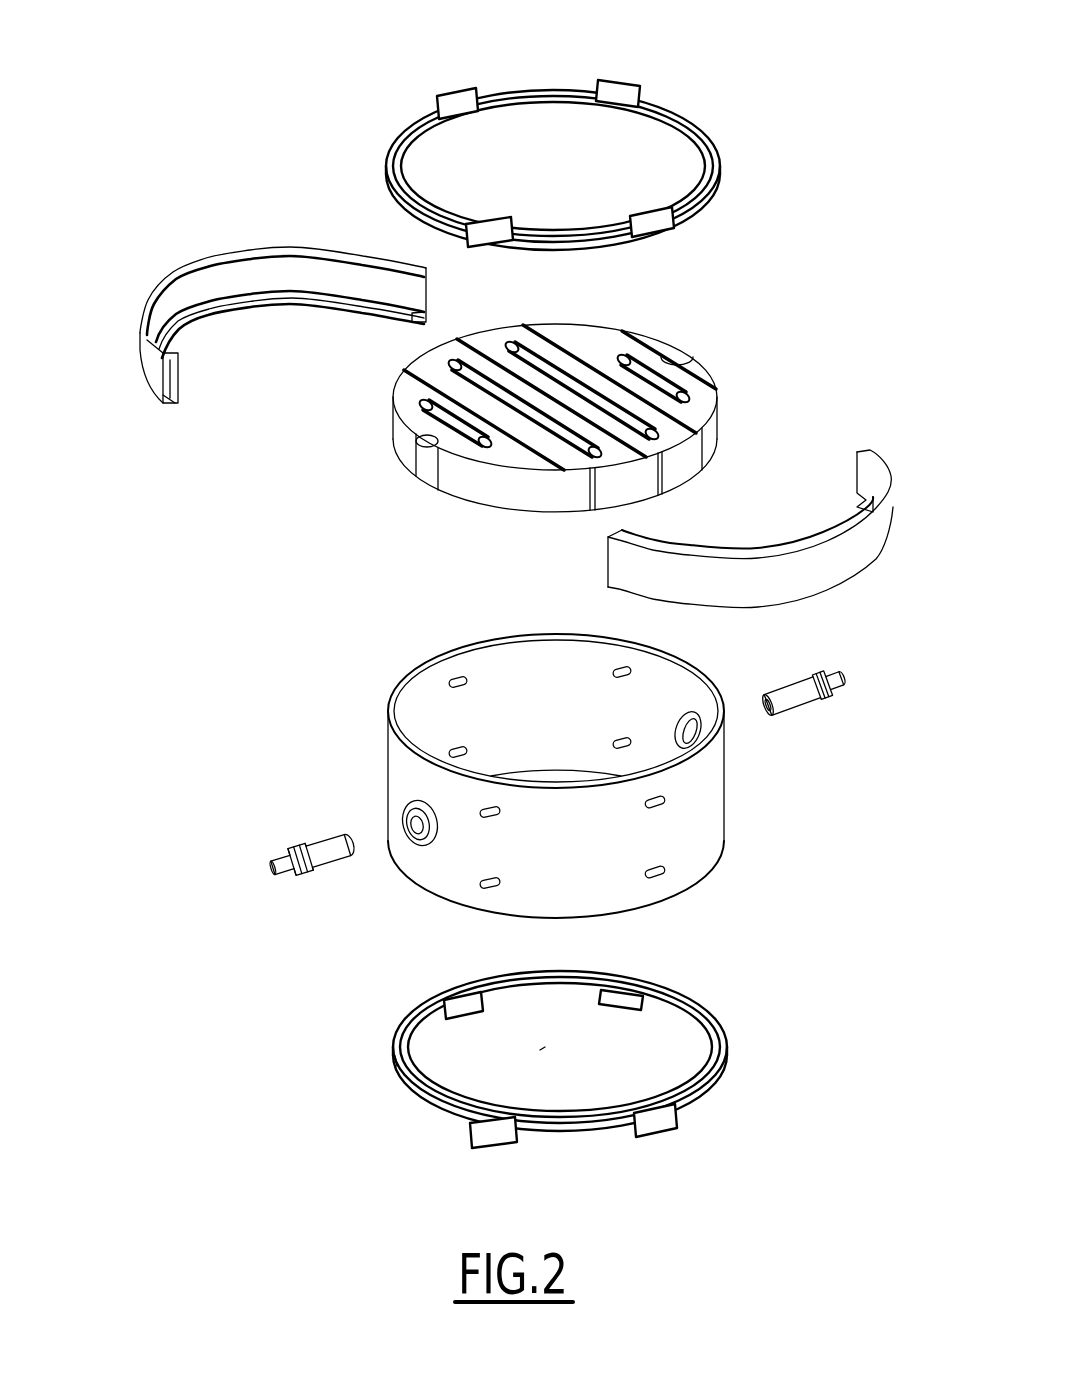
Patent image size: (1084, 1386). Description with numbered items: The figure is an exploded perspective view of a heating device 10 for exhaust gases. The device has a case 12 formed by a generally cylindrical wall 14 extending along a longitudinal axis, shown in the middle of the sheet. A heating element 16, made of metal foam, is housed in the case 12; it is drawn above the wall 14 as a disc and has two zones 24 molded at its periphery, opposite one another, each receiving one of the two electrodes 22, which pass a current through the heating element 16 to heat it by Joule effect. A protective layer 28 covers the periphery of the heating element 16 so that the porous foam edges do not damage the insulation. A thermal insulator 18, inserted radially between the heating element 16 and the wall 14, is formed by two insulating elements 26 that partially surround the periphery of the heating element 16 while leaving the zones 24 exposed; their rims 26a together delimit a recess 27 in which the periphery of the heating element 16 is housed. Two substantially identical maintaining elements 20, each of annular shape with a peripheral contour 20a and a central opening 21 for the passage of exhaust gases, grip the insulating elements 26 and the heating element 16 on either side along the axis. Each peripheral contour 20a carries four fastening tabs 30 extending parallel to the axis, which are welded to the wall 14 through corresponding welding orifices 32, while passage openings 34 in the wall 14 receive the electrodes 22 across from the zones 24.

The heating device 10 is at (101, 193).
The case 12 is at (353, 750).
The cylindrical wall 14 is at (690, 828).
The heating element 16 is at (680, 392).
The thermal insulator 18 is at (215, 240).
The maintaining element 20 is at (745, 110).
The peripheral contour 20a is at (415, 1100).
The central opening 21 is at (543, 1047).
The electrode 22 is at (795, 702).
The zone 24 is at (672, 352).
The insulating element 26 is at (143, 350).
The rim 26a is at (272, 247).
The recess 27 is at (240, 286).
The protective layer 28 is at (625, 487).
The fastening tab 30 is at (456, 98).
The welding orifice 32 is at (456, 677).
The passage opening 34 is at (404, 827).